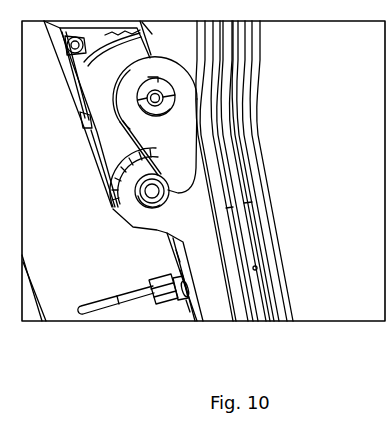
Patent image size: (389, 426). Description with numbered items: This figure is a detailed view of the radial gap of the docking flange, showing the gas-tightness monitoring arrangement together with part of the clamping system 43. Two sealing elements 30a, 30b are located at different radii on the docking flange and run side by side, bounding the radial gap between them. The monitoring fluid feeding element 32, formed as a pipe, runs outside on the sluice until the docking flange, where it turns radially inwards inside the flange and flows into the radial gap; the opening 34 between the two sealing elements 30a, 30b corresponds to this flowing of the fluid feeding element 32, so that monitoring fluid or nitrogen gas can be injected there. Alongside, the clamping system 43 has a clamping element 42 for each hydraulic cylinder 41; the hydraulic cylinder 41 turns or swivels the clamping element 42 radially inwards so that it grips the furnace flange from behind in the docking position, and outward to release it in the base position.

The sealing element 30a is at (237, 230).
The sealing element 30b is at (263, 251).
The monitoring fluid feeding element 32 is at (142, 298).
The opening 34 is at (268, 320).
The hydraulic cylinder 41 is at (72, 96).
The clamping element 42 is at (152, 141).
The clamping system 43 is at (28, 143).